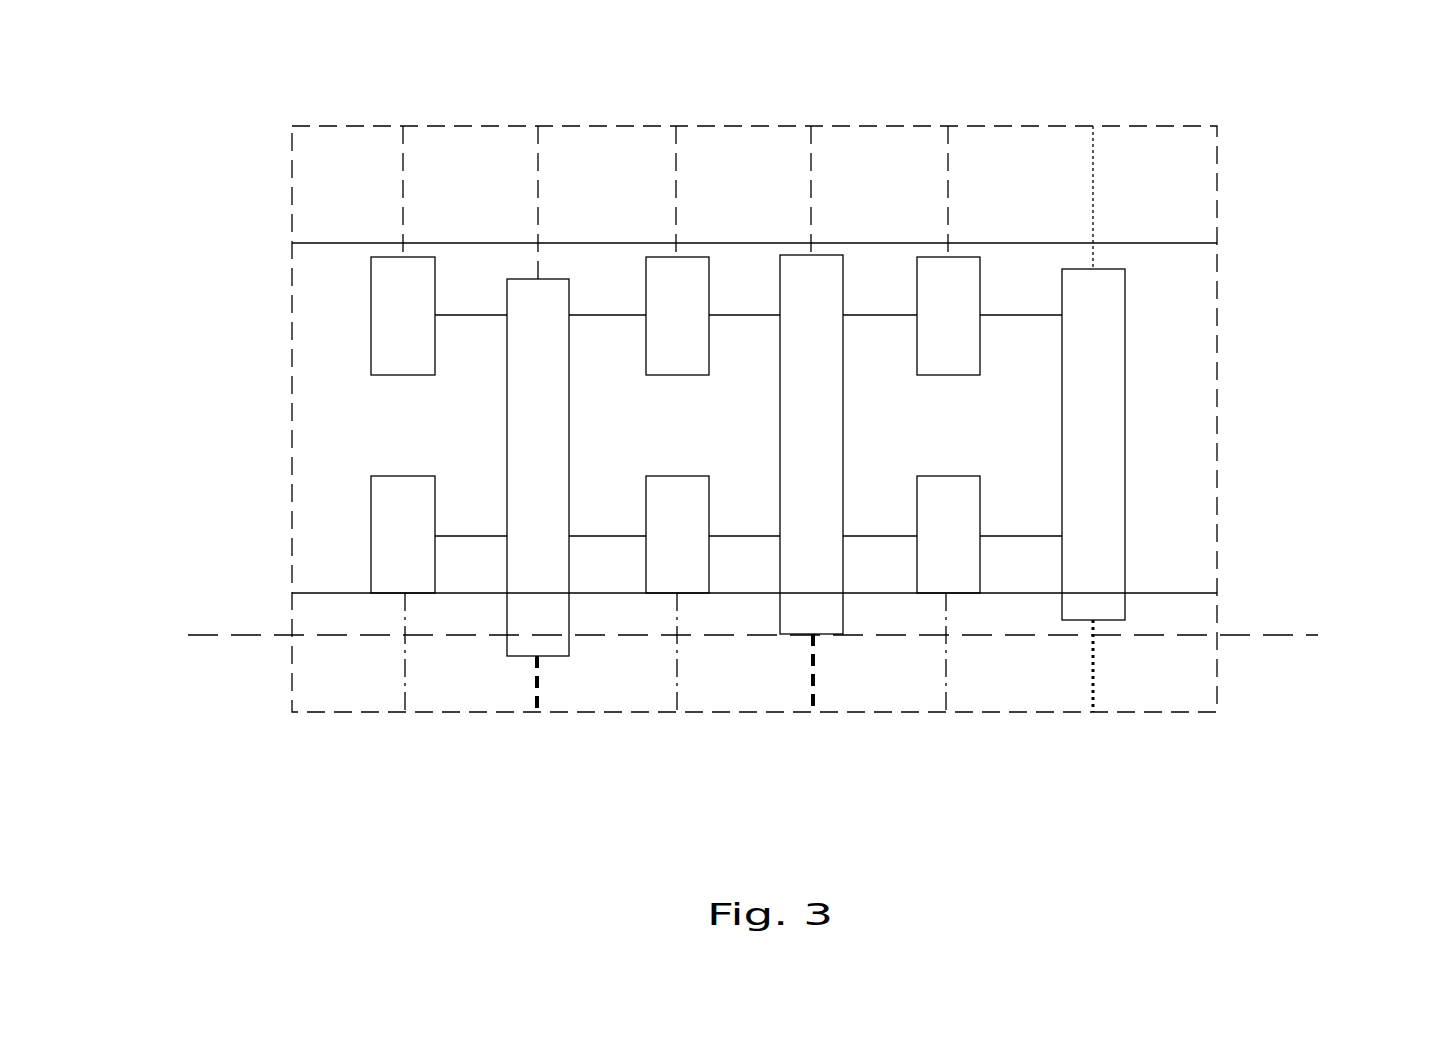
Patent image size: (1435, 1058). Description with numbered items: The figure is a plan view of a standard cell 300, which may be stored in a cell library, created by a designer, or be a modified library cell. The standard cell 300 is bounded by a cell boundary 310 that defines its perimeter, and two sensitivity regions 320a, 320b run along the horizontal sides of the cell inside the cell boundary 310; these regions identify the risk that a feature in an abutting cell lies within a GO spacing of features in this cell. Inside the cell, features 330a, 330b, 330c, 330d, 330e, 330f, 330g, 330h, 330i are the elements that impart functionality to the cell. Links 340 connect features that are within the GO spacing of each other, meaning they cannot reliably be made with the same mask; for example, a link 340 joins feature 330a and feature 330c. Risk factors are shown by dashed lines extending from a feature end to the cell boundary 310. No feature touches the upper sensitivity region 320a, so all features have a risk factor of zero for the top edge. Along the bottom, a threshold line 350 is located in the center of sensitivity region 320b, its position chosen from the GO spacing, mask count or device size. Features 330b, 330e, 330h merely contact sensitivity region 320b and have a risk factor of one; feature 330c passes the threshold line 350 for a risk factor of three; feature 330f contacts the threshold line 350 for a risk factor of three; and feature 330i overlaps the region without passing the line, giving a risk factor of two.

The standard cell 300 is at (1292, 158).
The cell boundary 310 is at (292, 177).
The sensitivity region 320a is at (472, 172).
The sensitivity region 320b is at (350, 665).
The feature 330a is at (371, 328).
The feature 330b is at (371, 520).
The feature 330c is at (555, 278).
The feature 330d is at (709, 302).
The feature 330e is at (709, 572).
The feature 330f is at (843, 300).
The feature 330g is at (980, 302).
The feature 330h is at (980, 572).
The feature 330i is at (1125, 315).
The link 340 is at (472, 315).
The threshold line 350 is at (1318, 635).